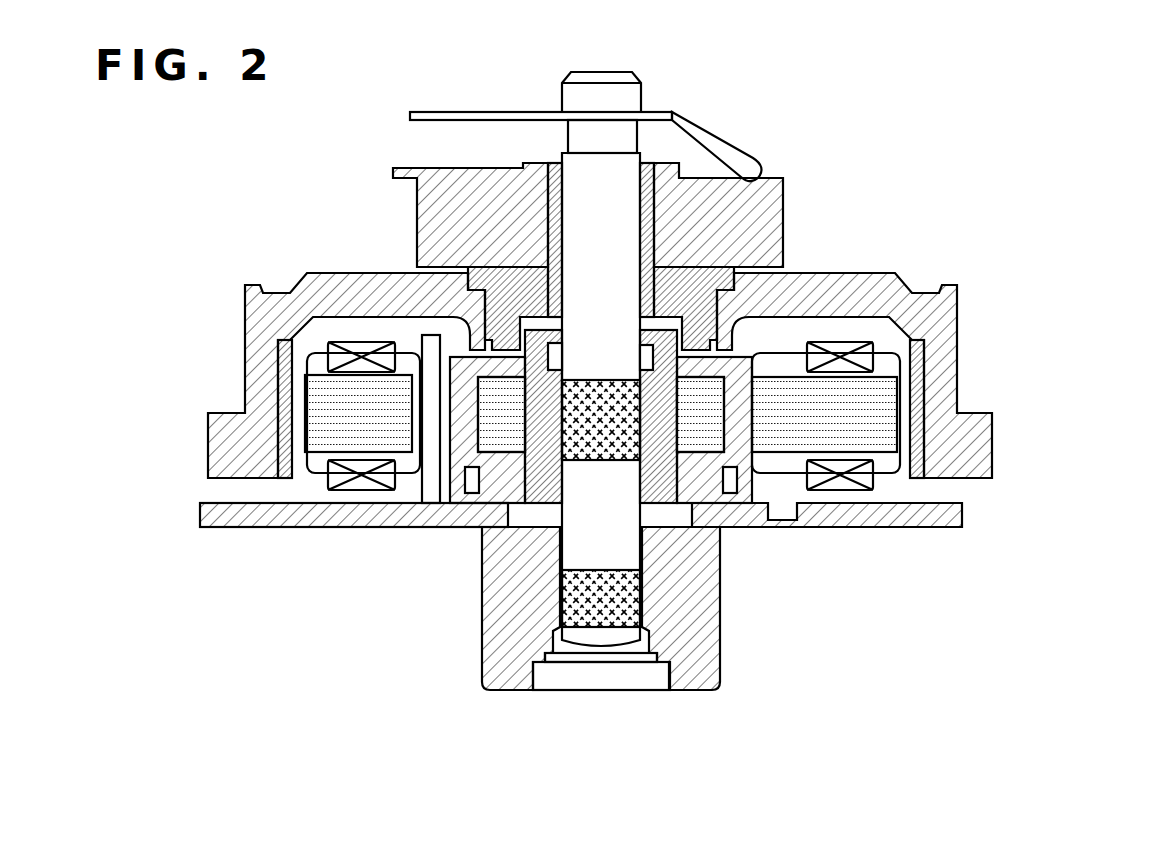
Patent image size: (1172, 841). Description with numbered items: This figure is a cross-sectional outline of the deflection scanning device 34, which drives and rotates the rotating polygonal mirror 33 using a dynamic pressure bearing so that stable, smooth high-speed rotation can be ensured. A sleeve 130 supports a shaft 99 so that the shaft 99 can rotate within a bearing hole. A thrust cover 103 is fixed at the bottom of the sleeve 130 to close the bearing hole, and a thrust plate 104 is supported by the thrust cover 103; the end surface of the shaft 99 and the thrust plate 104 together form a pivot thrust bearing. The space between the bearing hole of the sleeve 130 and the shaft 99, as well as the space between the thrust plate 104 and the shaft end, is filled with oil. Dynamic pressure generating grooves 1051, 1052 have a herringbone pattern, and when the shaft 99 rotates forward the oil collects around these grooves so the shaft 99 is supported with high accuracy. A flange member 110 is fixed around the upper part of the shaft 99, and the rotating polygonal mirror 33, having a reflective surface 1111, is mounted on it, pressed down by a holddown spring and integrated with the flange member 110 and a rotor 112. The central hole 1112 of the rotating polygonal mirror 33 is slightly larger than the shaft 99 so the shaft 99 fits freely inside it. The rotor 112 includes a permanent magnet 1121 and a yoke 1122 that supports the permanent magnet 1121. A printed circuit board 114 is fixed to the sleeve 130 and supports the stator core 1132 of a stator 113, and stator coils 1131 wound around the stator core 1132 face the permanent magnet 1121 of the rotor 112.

The deflection scanning device 34 is at (1113, 273).
The shaft 99 is at (604, 93).
The rotating polygonal mirror 33 is at (773, 178).
The reflective surface 1111 is at (785, 193).
The central hole 1112 is at (643, 240).
The flange member 110 is at (713, 270).
The rotor 112 is at (660, 375).
The yoke 1122 is at (948, 306).
The permanent magnet 1121 is at (920, 362).
The stator 113 is at (611, 478).
The stator core 1132 is at (750, 462).
The stator coils 1131 is at (840, 367).
The dynamic pressure generating groove 1051 is at (562, 420).
The dynamic pressure generating groove 1052 is at (563, 607).
The printed circuit board 114 is at (962, 512).
The sleeve 130 is at (722, 652).
The thrust plate 104 is at (638, 658).
The thrust cover 103 is at (570, 680).